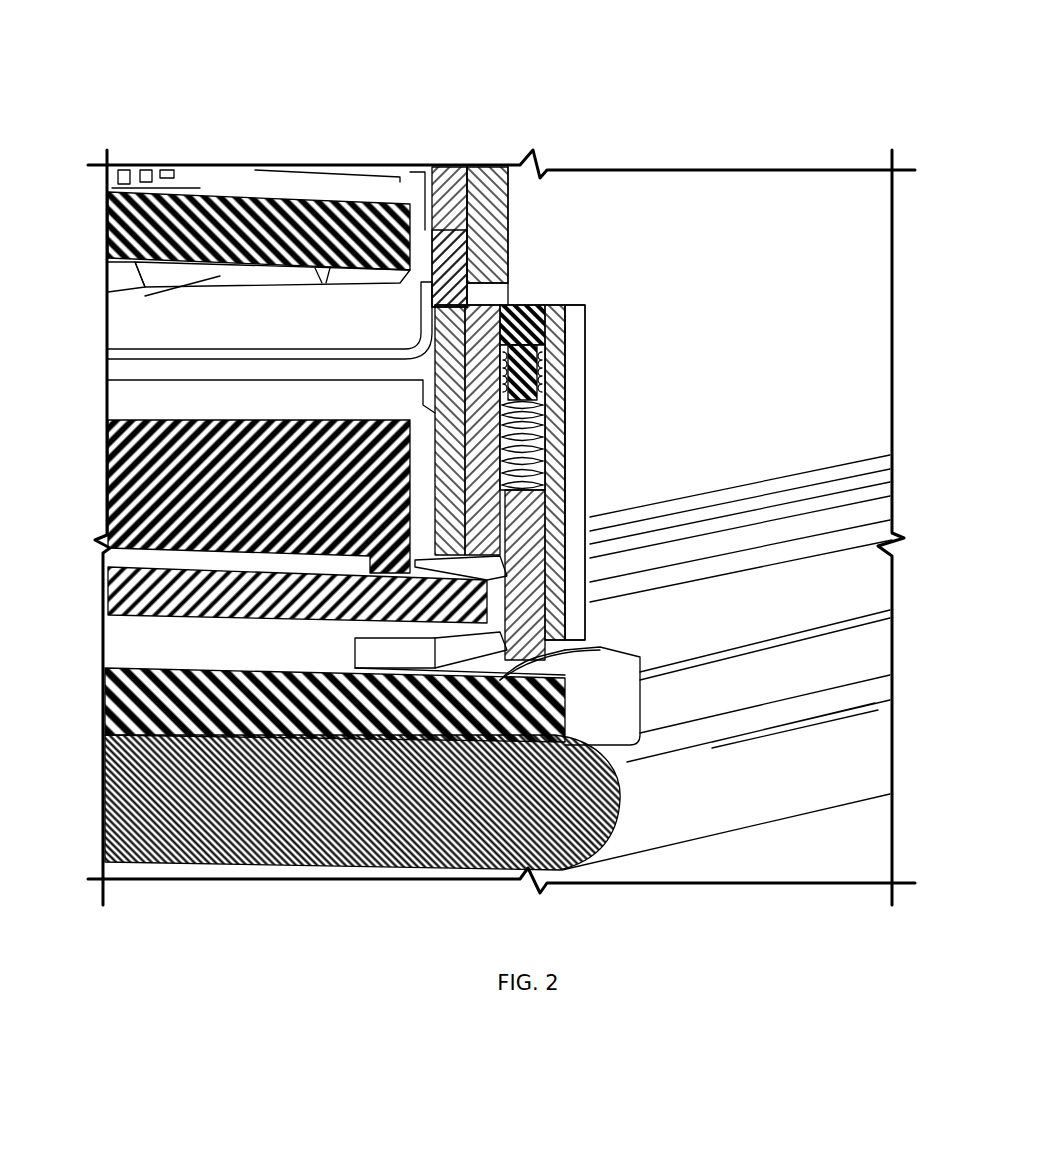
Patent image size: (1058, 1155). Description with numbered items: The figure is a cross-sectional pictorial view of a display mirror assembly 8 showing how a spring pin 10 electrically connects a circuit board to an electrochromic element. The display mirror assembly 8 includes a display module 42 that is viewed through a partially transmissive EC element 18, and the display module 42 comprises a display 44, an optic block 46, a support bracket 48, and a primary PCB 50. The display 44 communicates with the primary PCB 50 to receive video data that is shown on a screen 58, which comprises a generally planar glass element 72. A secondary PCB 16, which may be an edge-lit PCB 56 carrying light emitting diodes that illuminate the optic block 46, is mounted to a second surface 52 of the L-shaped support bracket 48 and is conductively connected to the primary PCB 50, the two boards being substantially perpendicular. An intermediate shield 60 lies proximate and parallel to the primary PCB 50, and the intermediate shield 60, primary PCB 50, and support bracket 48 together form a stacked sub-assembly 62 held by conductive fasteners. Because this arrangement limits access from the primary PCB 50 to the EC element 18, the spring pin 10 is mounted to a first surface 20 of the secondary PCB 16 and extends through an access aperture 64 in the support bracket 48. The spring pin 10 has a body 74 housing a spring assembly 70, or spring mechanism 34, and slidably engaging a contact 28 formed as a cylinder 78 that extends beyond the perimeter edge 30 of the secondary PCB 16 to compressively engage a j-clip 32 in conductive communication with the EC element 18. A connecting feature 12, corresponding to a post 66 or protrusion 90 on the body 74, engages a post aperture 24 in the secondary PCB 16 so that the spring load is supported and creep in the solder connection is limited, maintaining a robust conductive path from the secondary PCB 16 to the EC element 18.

The display mirror assembly 8 is at (718, 48).
The spring pin 10 is at (626, 472).
The connecting feature 12 is at (548, 249).
The secondary PCB 16 is at (450, 165).
The EC element 18 is at (118, 705).
The first surface 20 is at (490, 165).
The post aperture 24 is at (433, 333).
The contact 28 is at (727, 662).
The perimeter edge 30 is at (548, 510).
The j-clip 32 is at (625, 700).
The spring mechanism 34 is at (594, 397).
The display module 42 is at (221, 496).
The display 44 is at (118, 590).
The optic block 46 is at (120, 500).
The support bracket 48 is at (503, 165).
The primary PCB 50 is at (196, 205).
The second surface 52 is at (458, 165).
The edge-lit PCB 56 is at (392, 112).
The screen 58 is at (90, 662).
The intermediate shield 60 is at (105, 365).
The stacked sub-assembly 62 is at (62, 330).
The access aperture 64 is at (561, 447).
The post 66 is at (548, 249).
The spring assembly 70 is at (540, 368).
The glass element 72 is at (118, 802).
The body 74 is at (578, 400).
The cylinder 78 is at (620, 512).
The protrusion 90 is at (470, 265).